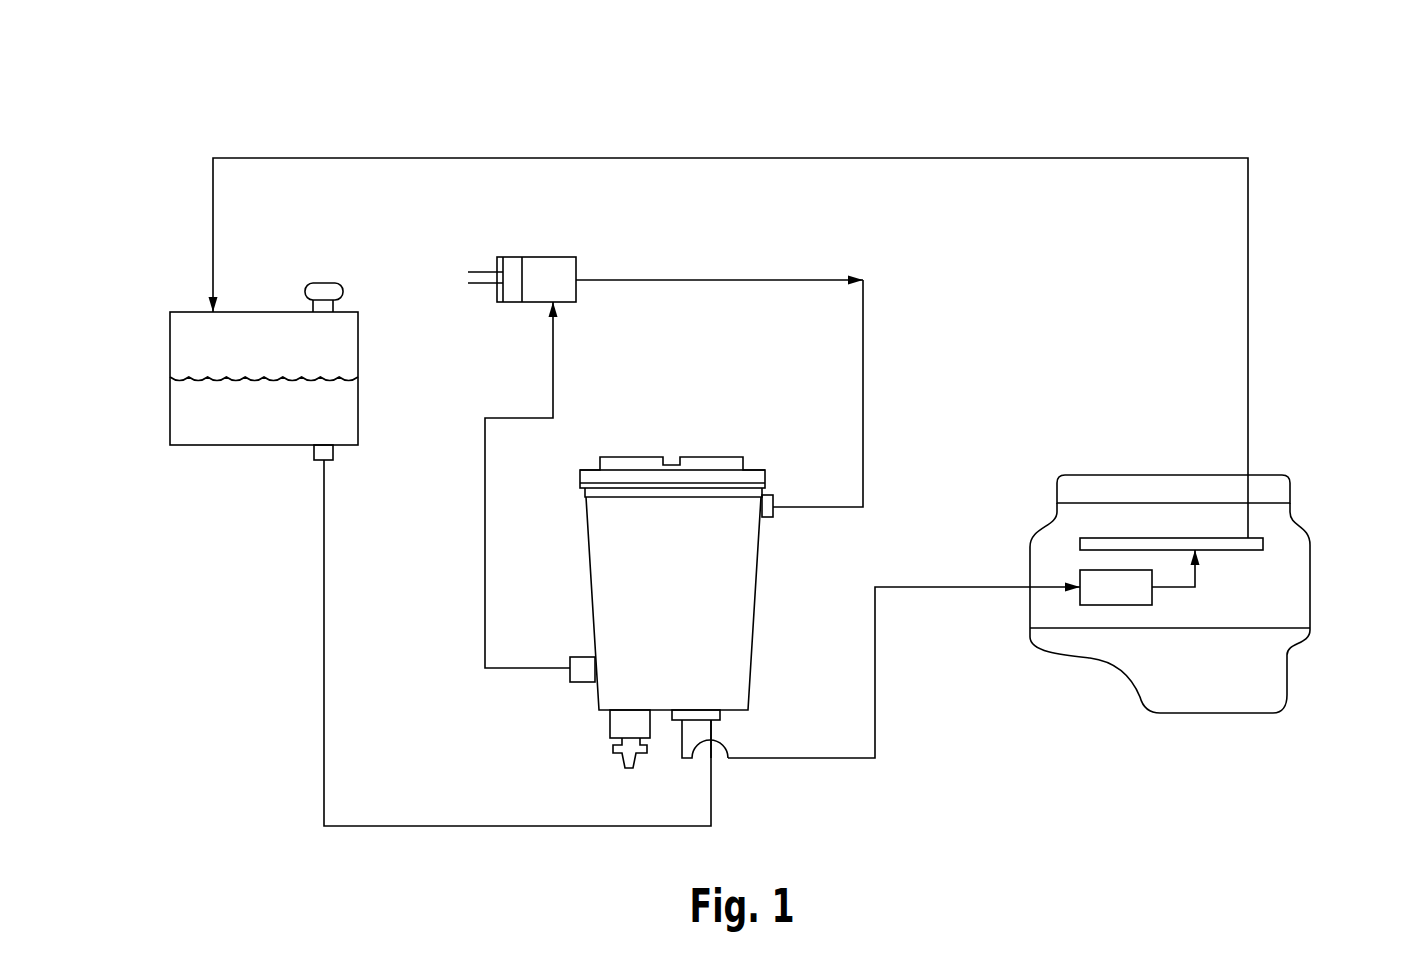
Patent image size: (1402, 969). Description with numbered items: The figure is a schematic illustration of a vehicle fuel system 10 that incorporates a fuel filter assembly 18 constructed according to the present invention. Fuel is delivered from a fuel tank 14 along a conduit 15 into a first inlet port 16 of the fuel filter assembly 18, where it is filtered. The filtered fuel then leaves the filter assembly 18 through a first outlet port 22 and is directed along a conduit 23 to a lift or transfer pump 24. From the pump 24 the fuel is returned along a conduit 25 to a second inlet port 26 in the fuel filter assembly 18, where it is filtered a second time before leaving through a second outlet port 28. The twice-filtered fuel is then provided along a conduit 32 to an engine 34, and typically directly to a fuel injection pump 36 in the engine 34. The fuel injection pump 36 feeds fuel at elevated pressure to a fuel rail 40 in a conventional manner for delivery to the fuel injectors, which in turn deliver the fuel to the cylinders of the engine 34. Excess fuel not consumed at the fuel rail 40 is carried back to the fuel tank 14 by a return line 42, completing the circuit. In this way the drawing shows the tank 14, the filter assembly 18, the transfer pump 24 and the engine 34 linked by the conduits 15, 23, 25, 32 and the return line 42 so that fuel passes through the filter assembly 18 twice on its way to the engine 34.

The fuel system 10 is at (718, 90).
The fuel tank 14 is at (170, 405).
The conduit 15 is at (324, 615).
The first inlet port 16 is at (718, 730).
The fuel filter assembly 18 is at (780, 575).
The first outlet port 22 is at (570, 677).
The conduit 23 is at (553, 372).
The lift or transfer pump 24 is at (542, 257).
The conduit 25 is at (683, 280).
The second inlet port 26 is at (775, 502).
The second outlet port 28 is at (678, 722).
The conduit 32 is at (875, 683).
The engine 34 is at (1332, 504).
The fuel injection pump 36 is at (1108, 606).
The fuel rail 40 is at (1225, 552).
The return line 42 is at (1010, 158).